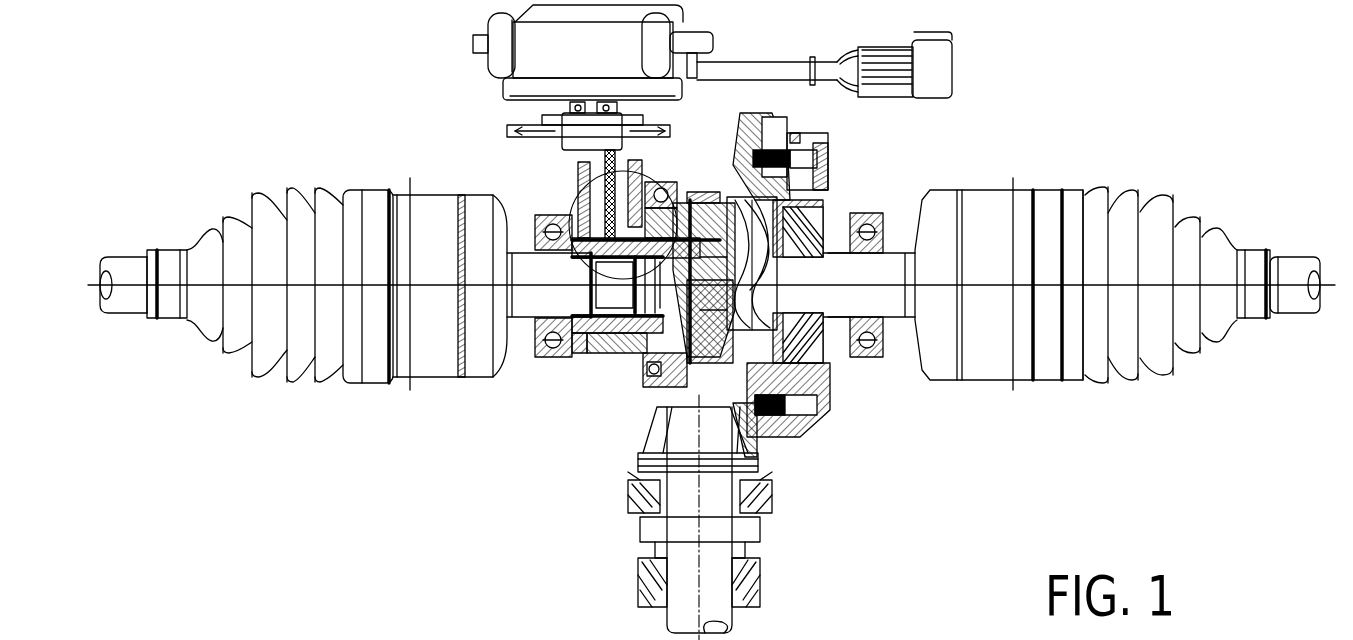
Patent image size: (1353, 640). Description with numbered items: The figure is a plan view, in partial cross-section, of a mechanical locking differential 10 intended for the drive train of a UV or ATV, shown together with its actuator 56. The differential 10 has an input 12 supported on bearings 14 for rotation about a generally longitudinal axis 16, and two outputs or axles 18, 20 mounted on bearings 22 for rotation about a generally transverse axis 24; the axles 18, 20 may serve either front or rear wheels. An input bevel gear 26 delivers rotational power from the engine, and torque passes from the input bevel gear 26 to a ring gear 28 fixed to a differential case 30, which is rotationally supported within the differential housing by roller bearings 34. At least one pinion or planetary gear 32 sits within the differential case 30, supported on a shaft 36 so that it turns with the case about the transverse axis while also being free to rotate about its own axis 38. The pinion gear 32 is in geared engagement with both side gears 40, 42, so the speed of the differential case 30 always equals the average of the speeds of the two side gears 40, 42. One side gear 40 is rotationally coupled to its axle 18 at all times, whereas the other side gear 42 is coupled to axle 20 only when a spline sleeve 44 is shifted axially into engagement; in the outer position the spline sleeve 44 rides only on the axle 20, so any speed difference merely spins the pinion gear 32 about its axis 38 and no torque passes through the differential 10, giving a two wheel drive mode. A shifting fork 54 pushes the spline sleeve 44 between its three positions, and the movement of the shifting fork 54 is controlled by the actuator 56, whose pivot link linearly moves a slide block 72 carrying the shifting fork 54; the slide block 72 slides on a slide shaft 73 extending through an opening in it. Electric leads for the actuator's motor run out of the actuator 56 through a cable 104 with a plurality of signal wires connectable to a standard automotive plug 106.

The mechanical locking differential 10 is at (497, 491).
The input 12 is at (723, 615).
The bearings 14 is at (773, 494).
The longitudinal axis 16 is at (703, 587).
The axle 18 is at (903, 305).
The axle 20 is at (524, 303).
The bearings 22 is at (536, 222).
The transverse axis 24 is at (1157, 287).
The input bevel gear 26 is at (640, 455).
The ring gear 28 is at (763, 458).
The differential case 30 is at (688, 205).
The pinion gear 32 is at (800, 168).
The roller bearings 34 is at (648, 373).
The shaft 36 is at (833, 333).
The pinion axis 38 is at (827, 383).
The side gear 40 is at (823, 223).
The side gear 42 is at (643, 363).
The spline sleeve 44 is at (585, 355).
The shifting fork 54 is at (578, 183).
The actuator 56 is at (472, 50).
The slide block 72 is at (613, 143).
The slide shaft 73 is at (667, 128).
The cable 104 is at (752, 60).
The automotive plug 106 is at (925, 62).